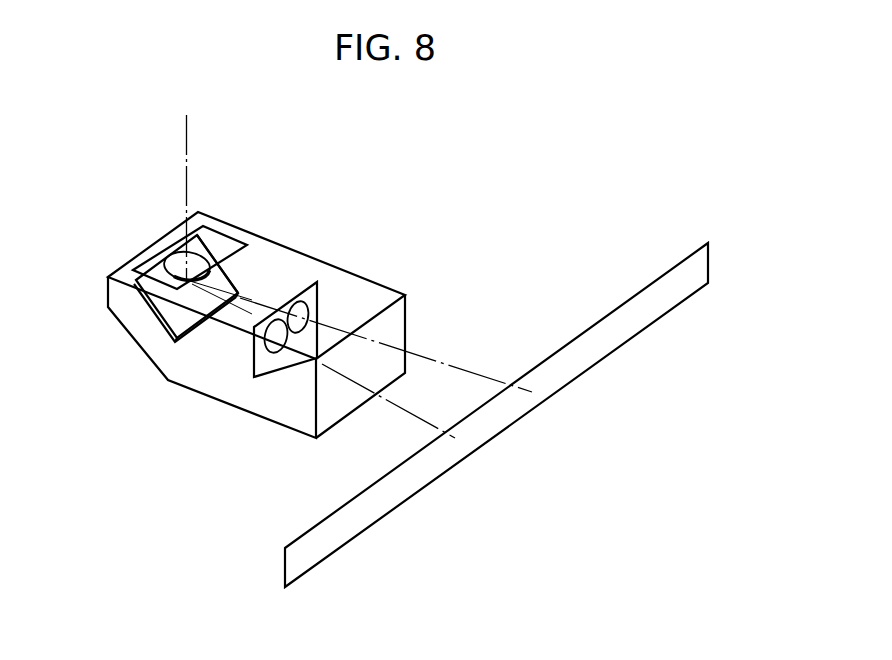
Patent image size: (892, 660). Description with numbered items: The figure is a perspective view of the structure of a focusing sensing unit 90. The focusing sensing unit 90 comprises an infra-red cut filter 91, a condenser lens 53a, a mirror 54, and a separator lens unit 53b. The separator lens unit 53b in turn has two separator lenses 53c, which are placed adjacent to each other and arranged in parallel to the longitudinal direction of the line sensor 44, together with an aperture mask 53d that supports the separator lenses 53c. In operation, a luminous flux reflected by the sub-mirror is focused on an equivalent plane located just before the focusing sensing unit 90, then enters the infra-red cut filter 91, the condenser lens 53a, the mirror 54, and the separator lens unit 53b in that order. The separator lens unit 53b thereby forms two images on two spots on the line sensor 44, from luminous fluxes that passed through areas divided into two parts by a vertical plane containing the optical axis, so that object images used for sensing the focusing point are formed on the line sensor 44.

The focusing sensing unit 90 is at (162, 377).
The infra-red cut filter 91 is at (217, 245).
The condenser lens 53a is at (175, 263).
The separator lens unit 53b is at (263, 359).
The separator lenses 53c is at (274, 320).
The aperture mask 53d is at (315, 295).
The mirror 54 is at (168, 308).
The line sensor 44 is at (653, 280).